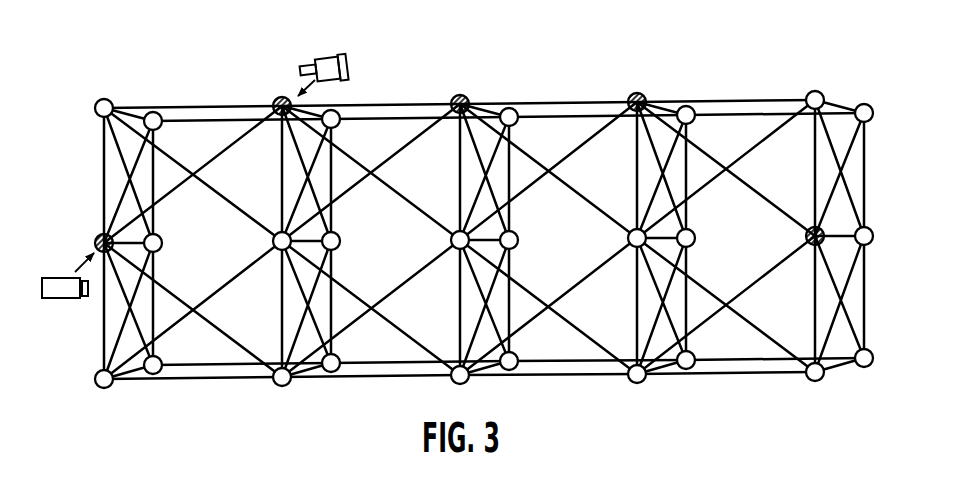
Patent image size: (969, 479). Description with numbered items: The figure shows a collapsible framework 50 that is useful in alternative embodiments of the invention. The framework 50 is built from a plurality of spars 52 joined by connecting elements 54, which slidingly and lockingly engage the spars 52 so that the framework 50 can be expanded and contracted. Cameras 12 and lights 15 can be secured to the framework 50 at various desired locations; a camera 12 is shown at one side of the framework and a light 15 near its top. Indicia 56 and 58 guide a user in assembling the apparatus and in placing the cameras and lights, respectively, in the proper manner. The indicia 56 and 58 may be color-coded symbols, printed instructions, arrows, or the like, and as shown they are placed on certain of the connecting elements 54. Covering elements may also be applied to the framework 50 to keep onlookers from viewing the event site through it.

The camera 12 is at (60, 300).
The light 15 is at (331, 54).
The collapsible framework 50 is at (163, 98).
The spar 52 is at (238, 104).
The connecting element 54 is at (103, 98).
The indicia 56 is at (92, 231).
The indicia 58 is at (284, 98).